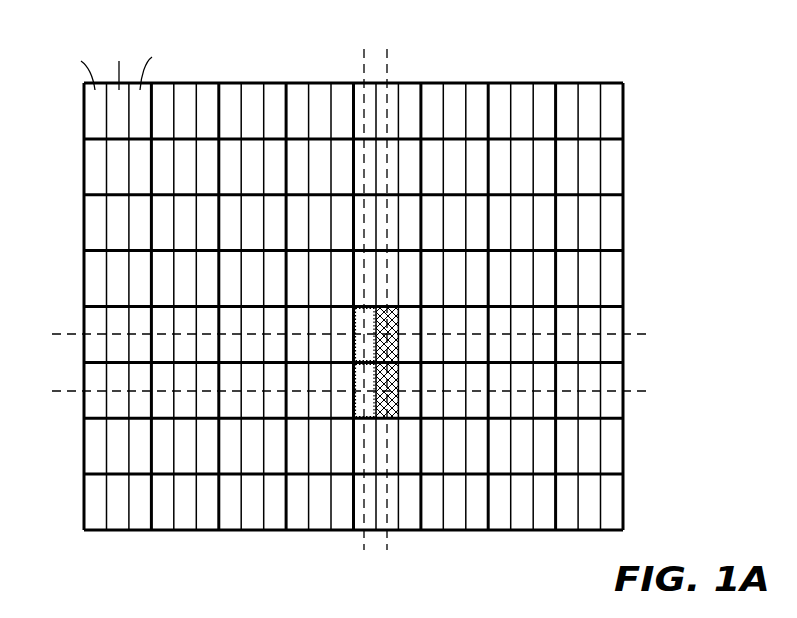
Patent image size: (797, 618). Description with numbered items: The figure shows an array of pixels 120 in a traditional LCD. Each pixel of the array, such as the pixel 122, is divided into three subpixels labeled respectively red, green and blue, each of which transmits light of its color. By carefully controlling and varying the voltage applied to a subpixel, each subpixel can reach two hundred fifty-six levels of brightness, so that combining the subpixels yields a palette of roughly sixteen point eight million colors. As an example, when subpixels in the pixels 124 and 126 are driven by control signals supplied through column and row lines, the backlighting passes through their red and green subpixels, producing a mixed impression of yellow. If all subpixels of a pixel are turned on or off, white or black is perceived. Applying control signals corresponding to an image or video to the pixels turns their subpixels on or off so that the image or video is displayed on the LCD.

The array of pixels 120 is at (355, 304).
The pixel 122 is at (84, 122).
The pixel 124 is at (352, 348).
The pixel 126 is at (352, 400).